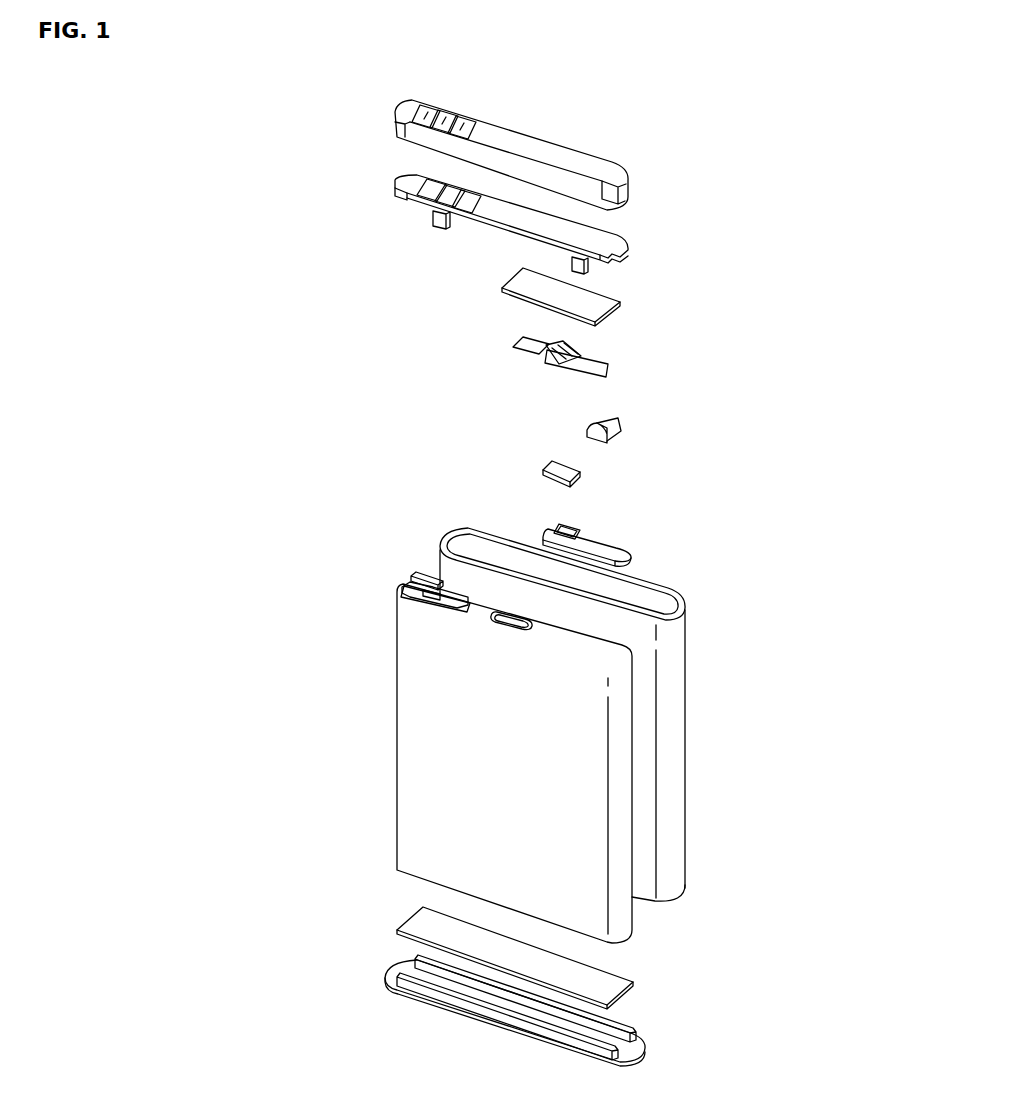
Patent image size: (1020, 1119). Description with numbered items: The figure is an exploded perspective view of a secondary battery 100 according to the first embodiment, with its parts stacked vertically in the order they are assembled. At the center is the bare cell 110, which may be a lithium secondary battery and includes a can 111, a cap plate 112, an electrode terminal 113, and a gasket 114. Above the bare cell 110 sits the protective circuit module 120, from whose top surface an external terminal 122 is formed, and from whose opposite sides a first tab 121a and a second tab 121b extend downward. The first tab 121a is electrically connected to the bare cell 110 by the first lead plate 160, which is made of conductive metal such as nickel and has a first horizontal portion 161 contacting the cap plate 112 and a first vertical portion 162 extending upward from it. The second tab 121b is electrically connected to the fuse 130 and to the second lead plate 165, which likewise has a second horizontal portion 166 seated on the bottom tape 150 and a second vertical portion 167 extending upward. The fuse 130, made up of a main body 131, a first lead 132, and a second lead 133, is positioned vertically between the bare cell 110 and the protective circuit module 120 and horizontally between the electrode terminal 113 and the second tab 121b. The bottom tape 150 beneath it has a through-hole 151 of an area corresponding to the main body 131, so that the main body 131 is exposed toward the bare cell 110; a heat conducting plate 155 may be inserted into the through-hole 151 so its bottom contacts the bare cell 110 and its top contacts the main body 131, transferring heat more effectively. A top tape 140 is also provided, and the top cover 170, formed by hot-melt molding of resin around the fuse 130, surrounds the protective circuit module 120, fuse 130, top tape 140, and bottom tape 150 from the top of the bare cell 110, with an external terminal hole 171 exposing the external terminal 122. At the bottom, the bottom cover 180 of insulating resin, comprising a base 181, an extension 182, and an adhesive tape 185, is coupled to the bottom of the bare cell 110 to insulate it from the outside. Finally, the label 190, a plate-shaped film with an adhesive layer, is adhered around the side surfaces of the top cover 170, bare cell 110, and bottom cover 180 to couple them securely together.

The secondary battery 100 is at (690, 108).
The bare cell 110 is at (481, 763).
The can 111 is at (405, 773).
The cap plate 112 is at (405, 598).
The electrode terminal 113 is at (513, 624).
The gasket 114 is at (495, 618).
The protective circuit module 120 is at (388, 184).
The first tab 121a is at (440, 224).
The second tab 121b is at (583, 269).
The external terminal 122 is at (417, 199).
The fuse 130 is at (613, 348).
The main body 131 is at (565, 353).
The first lead 132 is at (545, 343).
The second lead 133 is at (606, 368).
The top tape 140 is at (507, 280).
The bottom tape 150 is at (607, 542).
The through-hole 151 is at (572, 527).
The heat conducting plate 155 is at (585, 475).
The first lead plate 160 is at (407, 565).
The first horizontal portion 161 is at (407, 587).
The first vertical portion 162 is at (420, 575).
The second lead plate 165 is at (650, 433).
The second horizontal portion 166 is at (618, 421).
The second vertical portion 167 is at (615, 438).
The top cover 170 is at (407, 106).
The external terminal hole 171 is at (468, 118).
The bottom cover 180 is at (529, 1000).
The base 181 is at (395, 972).
The extension 182 is at (422, 990).
The adhesive tape 185 is at (617, 989).
The label 190 is at (443, 535).